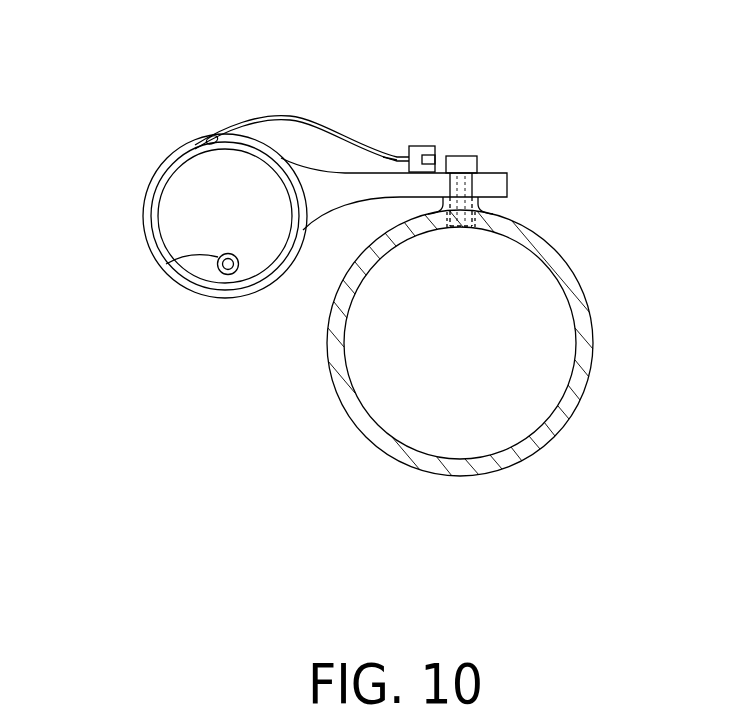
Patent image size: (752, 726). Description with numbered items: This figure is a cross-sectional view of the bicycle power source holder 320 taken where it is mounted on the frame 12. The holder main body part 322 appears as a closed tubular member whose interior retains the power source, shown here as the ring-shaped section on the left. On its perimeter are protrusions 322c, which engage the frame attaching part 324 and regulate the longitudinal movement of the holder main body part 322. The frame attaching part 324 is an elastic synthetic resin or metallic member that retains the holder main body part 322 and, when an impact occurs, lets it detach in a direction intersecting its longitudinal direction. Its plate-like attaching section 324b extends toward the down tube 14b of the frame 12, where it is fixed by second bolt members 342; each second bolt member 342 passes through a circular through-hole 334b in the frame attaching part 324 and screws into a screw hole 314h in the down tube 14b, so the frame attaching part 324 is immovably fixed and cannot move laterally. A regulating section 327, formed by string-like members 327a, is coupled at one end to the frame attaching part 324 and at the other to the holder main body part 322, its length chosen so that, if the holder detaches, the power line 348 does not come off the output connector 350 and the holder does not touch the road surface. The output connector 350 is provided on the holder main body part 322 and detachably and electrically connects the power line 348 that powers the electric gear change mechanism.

The frame 12 is at (363, 451).
The down tube 14b is at (443, 477).
The clamp assembly 320 is at (540, 158).
The holder main body part 322 is at (147, 172).
The protrusions 322c is at (160, 165).
The frame attaching part 324 is at (341, 165).
The attaching section 324b is at (383, 165).
The regulating section 327 is at (268, 116).
The string-like member 327a is at (351, 147).
The circular through-hole 334b is at (455, 172).
The second bolt members 342 is at (462, 170).
The screw holes 314h is at (480, 176).
The power line 348 is at (160, 265).
The output connector 350 is at (222, 273).